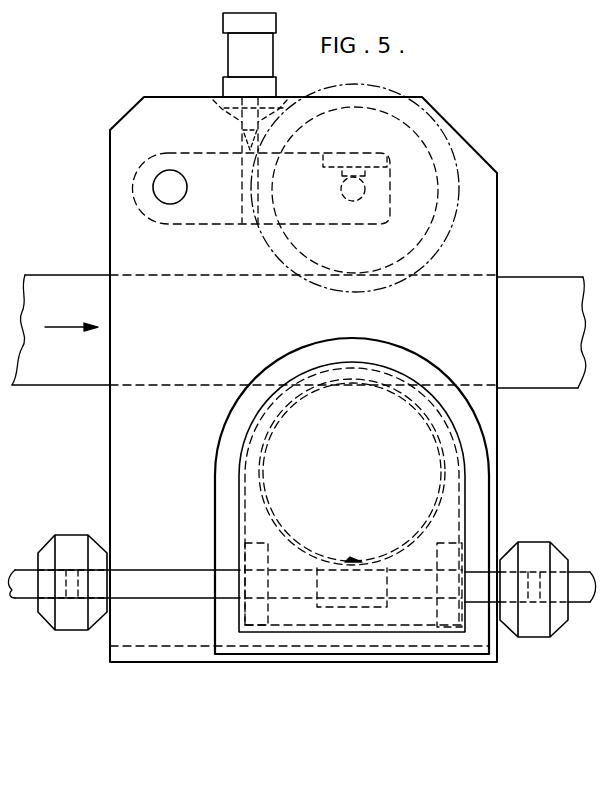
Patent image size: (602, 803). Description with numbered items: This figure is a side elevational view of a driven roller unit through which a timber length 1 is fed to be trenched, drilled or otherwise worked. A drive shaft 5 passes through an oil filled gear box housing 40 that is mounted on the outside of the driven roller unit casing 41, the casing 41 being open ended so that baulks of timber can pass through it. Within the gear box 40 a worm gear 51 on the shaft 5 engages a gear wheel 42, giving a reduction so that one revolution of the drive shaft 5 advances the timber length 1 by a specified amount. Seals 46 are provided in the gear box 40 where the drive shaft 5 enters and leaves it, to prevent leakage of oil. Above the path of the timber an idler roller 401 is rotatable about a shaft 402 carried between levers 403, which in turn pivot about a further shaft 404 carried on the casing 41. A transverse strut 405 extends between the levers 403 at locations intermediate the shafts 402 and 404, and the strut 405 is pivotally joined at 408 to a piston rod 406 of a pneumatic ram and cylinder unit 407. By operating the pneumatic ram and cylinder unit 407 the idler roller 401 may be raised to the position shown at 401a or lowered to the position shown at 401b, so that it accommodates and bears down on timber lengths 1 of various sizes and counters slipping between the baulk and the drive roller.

The timber length 1 is at (77, 283).
The drive shaft 5 is at (578, 600).
The gear box housing 40 is at (465, 457).
The driven roller unit casing 41 is at (500, 192).
The gear wheel 42 is at (437, 433).
The seals 46 is at (240, 543).
The worm gear 51 is at (357, 565).
The idler roller 401 is at (410, 122).
The raised position of idler roller 401a is at (395, 87).
The lowered position of idler roller 401b is at (427, 257).
The shaft 402 is at (367, 188).
The levers 403 is at (137, 153).
The further shaft 404 is at (160, 187).
The transverse strut 405 is at (242, 145).
The piston rod 406 is at (213, 100).
The pneumatic ram and cylinder unit 407 is at (238, 48).
The pivotal joint 408 is at (250, 148).